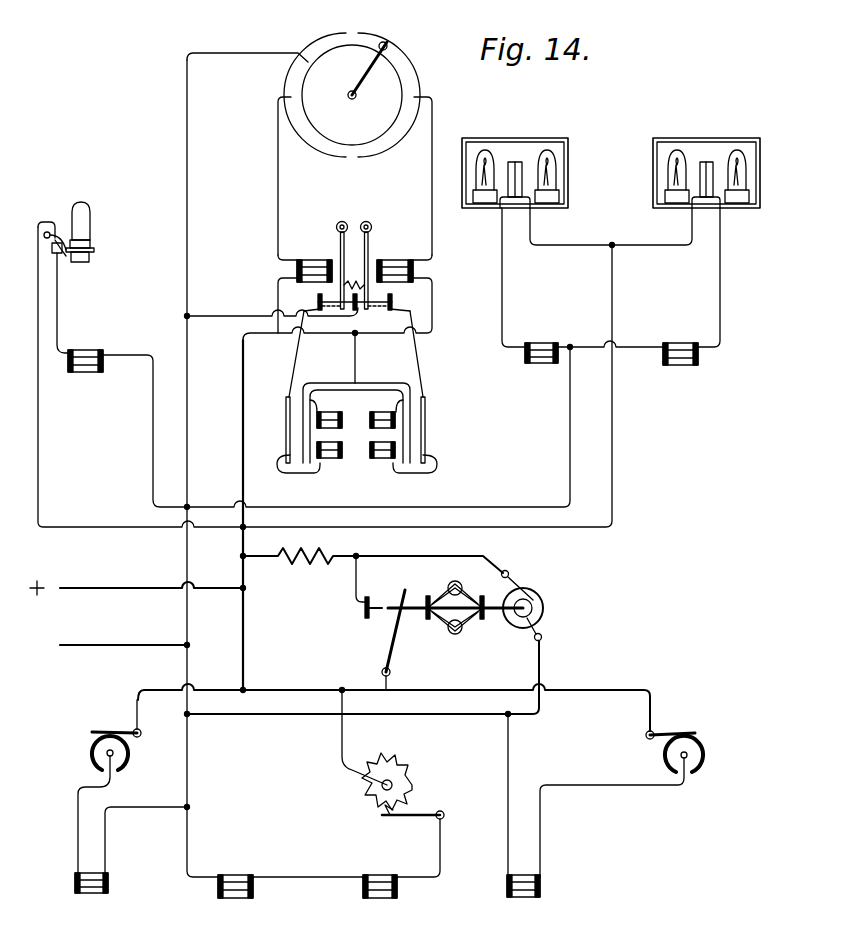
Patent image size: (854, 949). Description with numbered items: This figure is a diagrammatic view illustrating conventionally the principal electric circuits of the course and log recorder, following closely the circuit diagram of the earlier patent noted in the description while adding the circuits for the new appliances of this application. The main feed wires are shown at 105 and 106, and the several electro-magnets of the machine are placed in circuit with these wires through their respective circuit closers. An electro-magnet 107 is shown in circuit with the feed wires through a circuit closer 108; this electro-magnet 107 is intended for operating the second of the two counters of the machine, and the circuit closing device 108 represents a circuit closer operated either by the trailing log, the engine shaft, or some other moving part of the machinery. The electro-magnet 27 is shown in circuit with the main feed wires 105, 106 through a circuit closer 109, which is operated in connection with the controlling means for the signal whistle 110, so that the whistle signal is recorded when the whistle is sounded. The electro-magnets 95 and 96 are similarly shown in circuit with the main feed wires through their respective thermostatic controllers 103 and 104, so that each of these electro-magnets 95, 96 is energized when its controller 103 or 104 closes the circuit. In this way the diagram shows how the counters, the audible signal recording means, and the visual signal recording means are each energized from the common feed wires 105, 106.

The electro-magnet 27 is at (90, 352).
The electro-magnet 95 is at (542, 348).
The electro-magnet 96 is at (680, 339).
The thermostatic controller 103 is at (515, 162).
The thermostatic controller 104 is at (708, 162).
The main feed wire 105 is at (138, 580).
The main feed wire 106 is at (125, 634).
The electro-magnet 107 is at (132, 856).
The circuit closer 108 is at (109, 786).
The circuit closer 109 is at (62, 257).
The signal whistle 110 is at (85, 232).